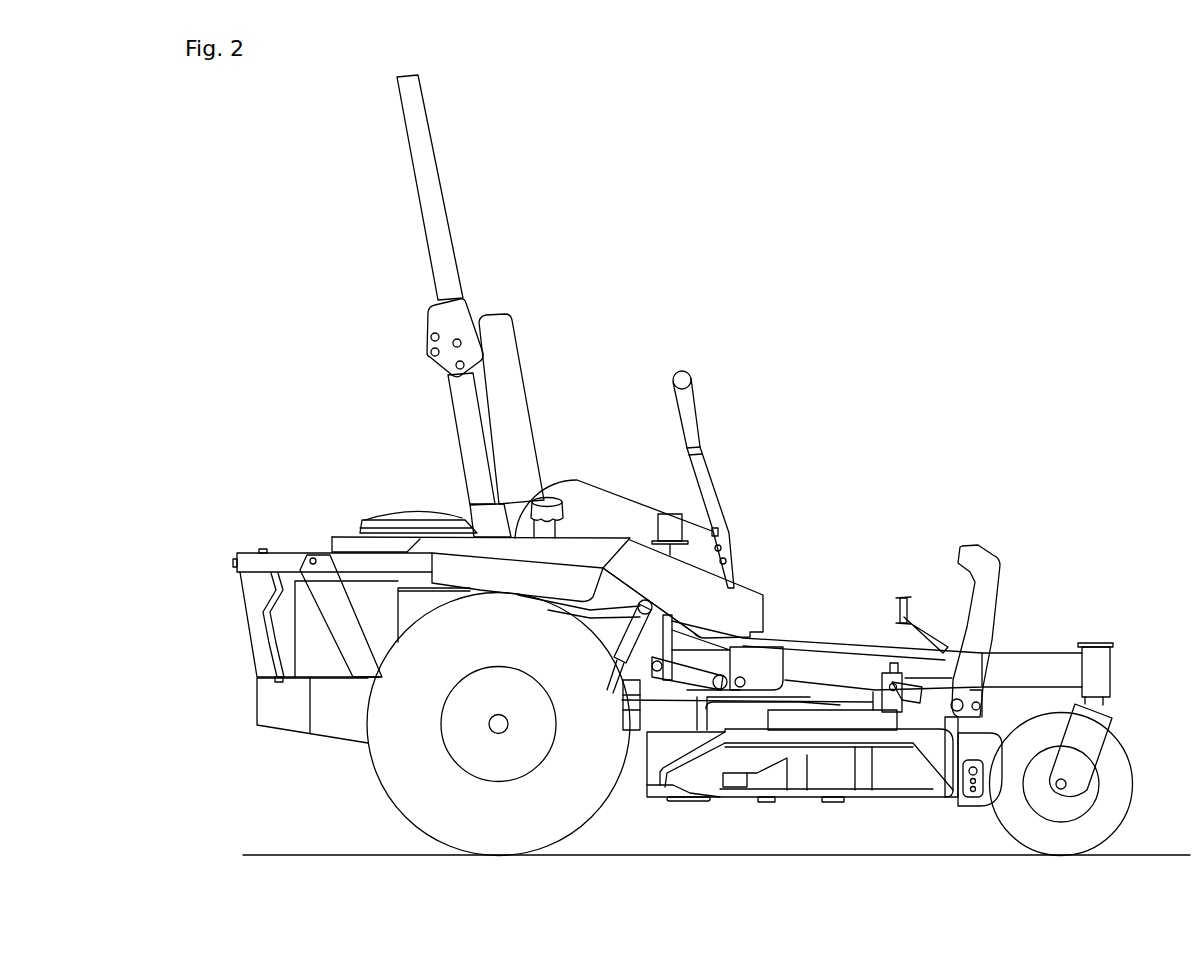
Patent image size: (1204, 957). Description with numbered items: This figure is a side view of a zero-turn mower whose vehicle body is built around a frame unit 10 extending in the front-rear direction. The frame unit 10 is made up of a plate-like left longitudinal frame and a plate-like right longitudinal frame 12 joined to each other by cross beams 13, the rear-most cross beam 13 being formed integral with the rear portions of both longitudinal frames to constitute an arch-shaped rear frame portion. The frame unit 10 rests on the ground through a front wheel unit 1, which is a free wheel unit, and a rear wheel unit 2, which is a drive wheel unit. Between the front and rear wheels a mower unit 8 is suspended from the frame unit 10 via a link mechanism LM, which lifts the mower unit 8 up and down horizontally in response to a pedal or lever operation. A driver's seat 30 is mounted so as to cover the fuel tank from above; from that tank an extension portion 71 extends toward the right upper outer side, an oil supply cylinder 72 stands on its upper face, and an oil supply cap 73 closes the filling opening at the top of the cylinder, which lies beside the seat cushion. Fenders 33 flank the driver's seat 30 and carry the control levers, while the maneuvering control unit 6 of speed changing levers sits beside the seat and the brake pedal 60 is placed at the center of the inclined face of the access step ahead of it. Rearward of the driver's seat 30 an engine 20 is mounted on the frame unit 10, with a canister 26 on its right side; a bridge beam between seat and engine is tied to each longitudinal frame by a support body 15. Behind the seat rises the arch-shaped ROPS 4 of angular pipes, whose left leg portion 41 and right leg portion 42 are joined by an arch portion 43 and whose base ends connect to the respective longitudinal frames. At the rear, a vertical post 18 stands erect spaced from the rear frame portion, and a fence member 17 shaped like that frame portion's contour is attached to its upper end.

The front wheel unit 1 is at (1133, 790).
The rear wheel unit 2 is at (386, 798).
The ROPS 4 is at (420, 290).
The arch portion 43 is at (405, 110).
The right leg portion 42 is at (455, 392).
The left leg portion 41 is at (471, 439).
The maneuvering control unit 6 is at (711, 416).
The driver's seat 30 is at (606, 492).
The oil supply cap 73 is at (548, 498).
The oil supply cylinder 72 is at (558, 530).
The support body 15 is at (470, 505).
The engine 20 is at (393, 508).
The fence member 17 is at (250, 552).
The fender 33 is at (720, 607).
The brake pedal 60 is at (900, 612).
The vertical post 18 is at (243, 612).
The canister 26 is at (410, 603).
The extension portion 71 is at (540, 578).
The cross beam 13 is at (256, 698).
The frame unit 10 is at (282, 740).
The right longitudinal frame 12 is at (340, 728).
The link mechanism LM is at (668, 695).
The mower unit 8 is at (871, 808).